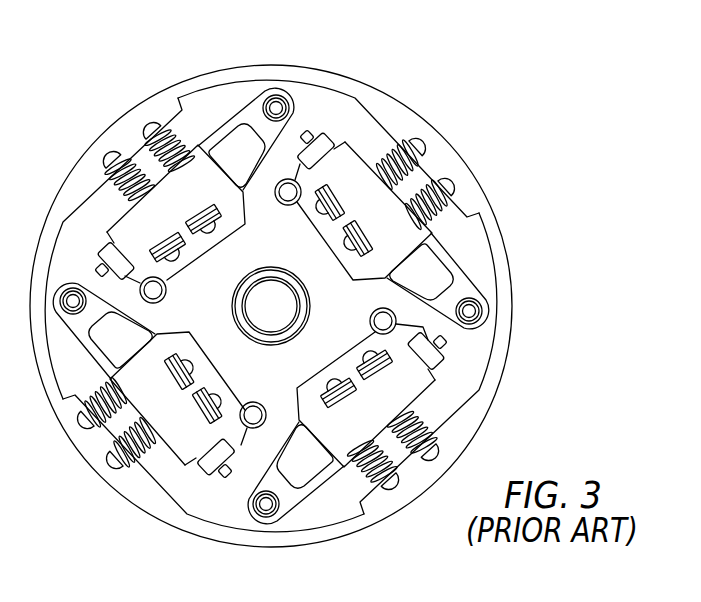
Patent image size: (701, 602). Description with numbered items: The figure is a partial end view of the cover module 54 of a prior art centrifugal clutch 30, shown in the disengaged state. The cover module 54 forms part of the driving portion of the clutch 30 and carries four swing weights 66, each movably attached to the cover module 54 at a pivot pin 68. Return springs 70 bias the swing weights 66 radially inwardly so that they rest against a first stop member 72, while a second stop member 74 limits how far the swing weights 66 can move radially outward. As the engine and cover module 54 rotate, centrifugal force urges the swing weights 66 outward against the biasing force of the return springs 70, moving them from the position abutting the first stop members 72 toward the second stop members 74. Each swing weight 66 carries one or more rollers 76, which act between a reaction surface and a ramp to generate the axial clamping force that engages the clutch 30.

The centrifugal clutch 30 is at (190, 76).
The cover module 54 is at (435, 123).
The swing weights 66 is at (233, 226).
The pivot pins 68 is at (290, 100).
The return springs 70 is at (397, 160).
The first stop member 72 is at (168, 292).
The second stop member 74 is at (487, 400).
The rollers 76 is at (105, 248).